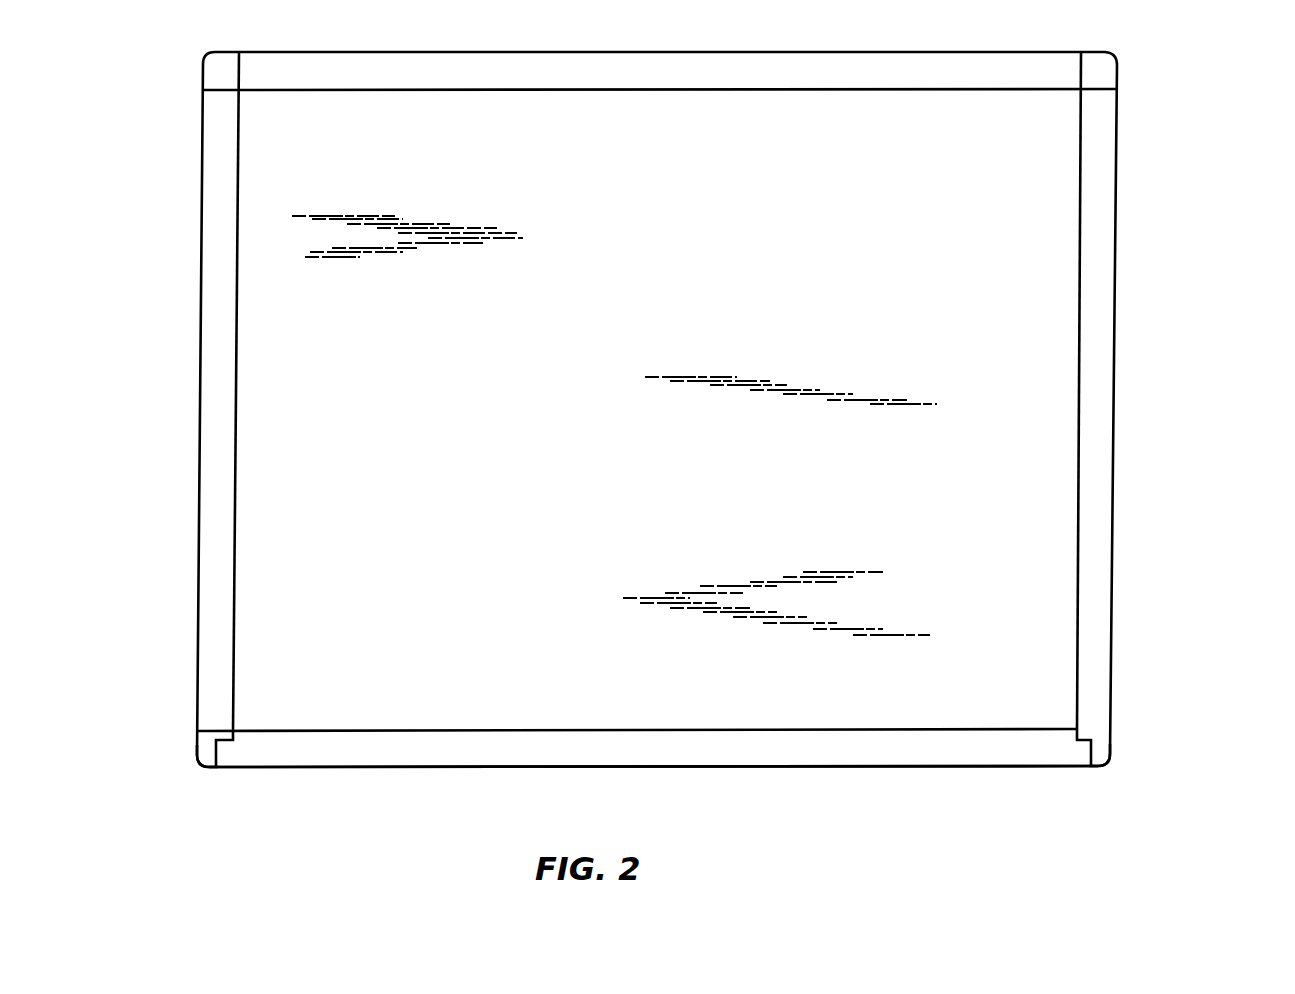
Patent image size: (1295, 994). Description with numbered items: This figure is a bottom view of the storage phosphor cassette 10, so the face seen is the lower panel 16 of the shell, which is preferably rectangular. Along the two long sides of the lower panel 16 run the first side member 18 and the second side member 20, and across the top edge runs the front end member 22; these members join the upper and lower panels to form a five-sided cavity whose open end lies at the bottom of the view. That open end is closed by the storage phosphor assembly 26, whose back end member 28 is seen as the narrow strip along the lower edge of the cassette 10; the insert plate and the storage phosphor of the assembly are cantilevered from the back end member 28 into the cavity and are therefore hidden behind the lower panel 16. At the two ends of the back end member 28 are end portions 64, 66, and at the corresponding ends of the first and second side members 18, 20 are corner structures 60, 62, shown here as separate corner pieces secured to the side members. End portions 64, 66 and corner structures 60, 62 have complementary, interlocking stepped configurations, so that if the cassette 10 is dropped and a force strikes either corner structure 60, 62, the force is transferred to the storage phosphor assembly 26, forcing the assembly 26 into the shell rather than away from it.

The storage phosphor cassette 10 is at (1152, 284).
The lower panel 16 is at (1057, 582).
The first side member 18 is at (1104, 484).
The second side member 20 is at (211, 554).
The front end member 22 is at (875, 75).
The storage phosphor assembly 26 is at (912, 765).
The back end member 28 is at (853, 755).
The corner structure 60 is at (200, 757).
The corner structure 62 is at (1104, 751).
The end portion 64 is at (225, 757).
The end portion 66 is at (1083, 756).